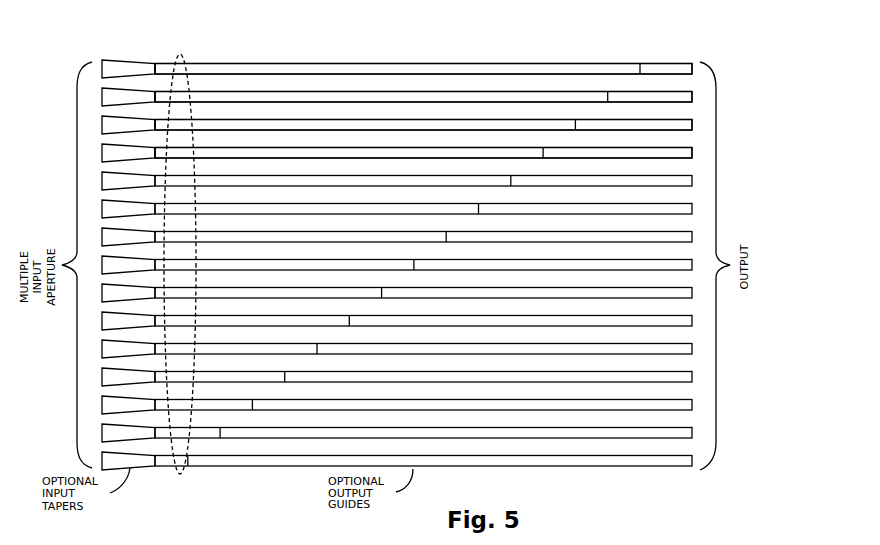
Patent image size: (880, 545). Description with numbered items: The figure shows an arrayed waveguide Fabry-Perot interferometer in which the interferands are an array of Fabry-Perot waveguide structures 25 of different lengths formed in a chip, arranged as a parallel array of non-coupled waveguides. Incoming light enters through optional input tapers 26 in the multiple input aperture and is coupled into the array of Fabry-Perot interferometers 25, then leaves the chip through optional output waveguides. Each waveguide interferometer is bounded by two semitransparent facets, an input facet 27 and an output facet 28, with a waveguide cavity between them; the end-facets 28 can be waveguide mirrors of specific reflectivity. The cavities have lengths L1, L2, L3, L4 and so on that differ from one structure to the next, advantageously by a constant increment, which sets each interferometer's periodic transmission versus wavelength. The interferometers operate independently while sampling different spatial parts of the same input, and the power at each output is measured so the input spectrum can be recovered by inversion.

The Fabry-Perot waveguide structures 25 is at (296, 69).
The input tapers 26 is at (118, 68).
The input facet 27 is at (156, 68).
The output facet 28 is at (640, 64).
The length L1 is at (476, 68).
The length L2 is at (531, 97).
The length L3 is at (397, 125).
The length L4 is at (356, 153).